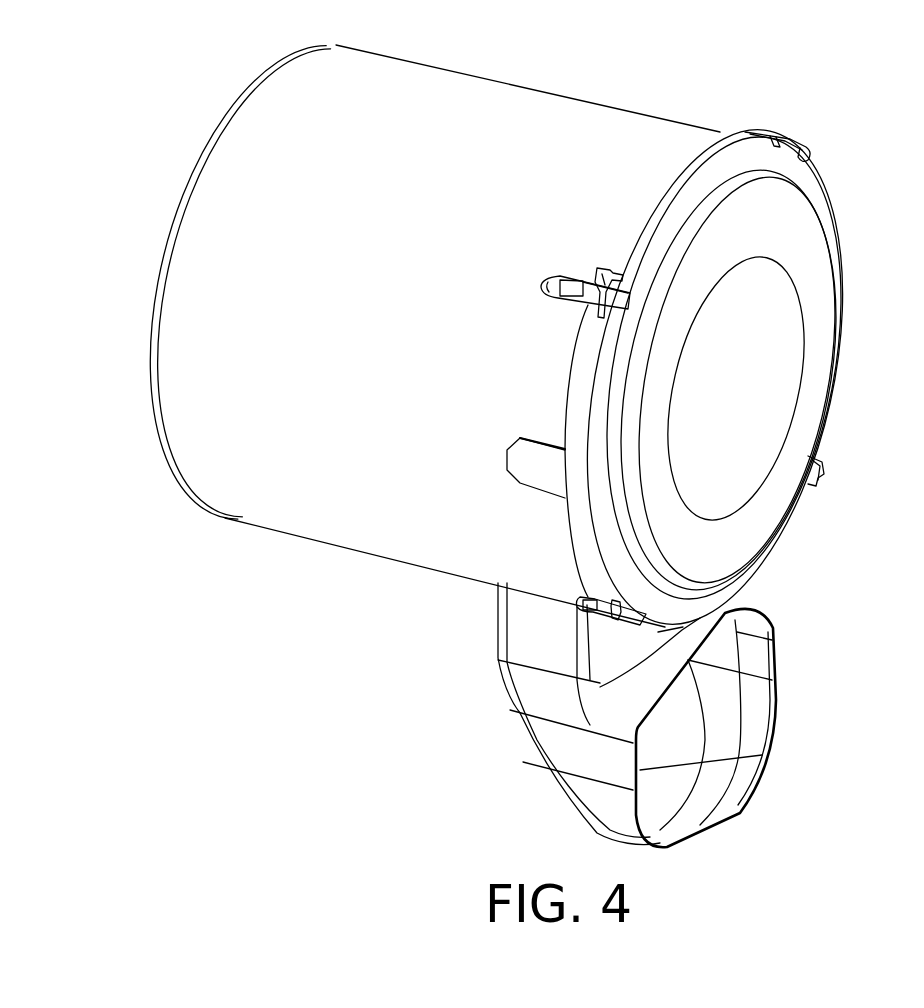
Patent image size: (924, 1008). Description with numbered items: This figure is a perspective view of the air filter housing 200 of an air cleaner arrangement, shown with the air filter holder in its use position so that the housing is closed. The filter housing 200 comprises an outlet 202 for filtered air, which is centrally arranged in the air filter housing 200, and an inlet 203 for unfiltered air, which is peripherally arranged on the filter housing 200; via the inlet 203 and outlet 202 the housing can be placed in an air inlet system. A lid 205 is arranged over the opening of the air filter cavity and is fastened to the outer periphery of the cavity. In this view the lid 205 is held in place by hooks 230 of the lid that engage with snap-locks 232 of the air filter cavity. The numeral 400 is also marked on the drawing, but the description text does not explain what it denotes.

The air filter housing 200 is at (540, 83).
The outlet 202 is at (163, 253).
The inlet 203 is at (713, 712).
The lid 205 is at (733, 535).
The hooks 230 is at (623, 277).
The snap-locks 232 is at (558, 277).
The air cleaner housing 400 is at (438, 125).